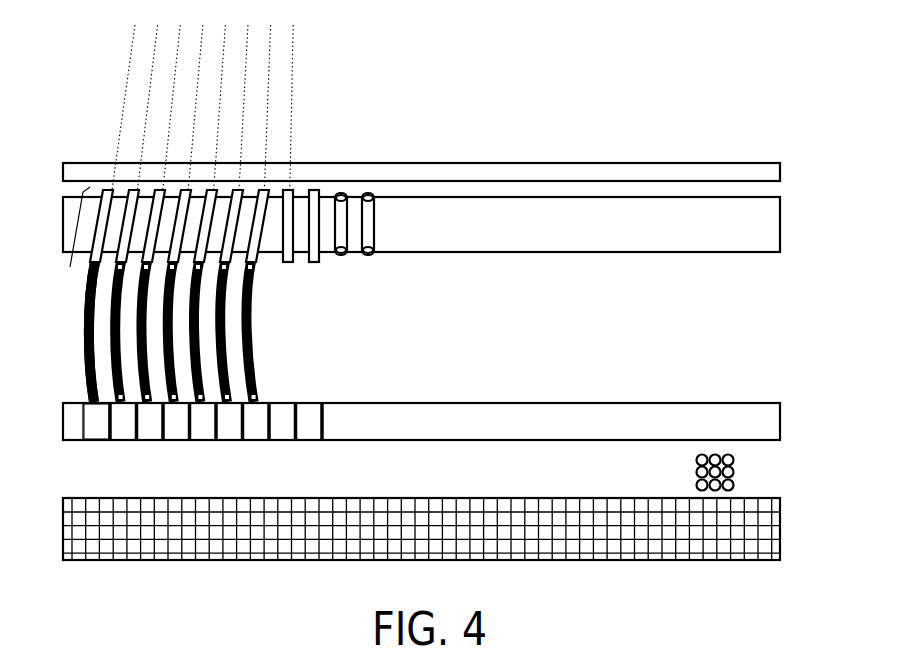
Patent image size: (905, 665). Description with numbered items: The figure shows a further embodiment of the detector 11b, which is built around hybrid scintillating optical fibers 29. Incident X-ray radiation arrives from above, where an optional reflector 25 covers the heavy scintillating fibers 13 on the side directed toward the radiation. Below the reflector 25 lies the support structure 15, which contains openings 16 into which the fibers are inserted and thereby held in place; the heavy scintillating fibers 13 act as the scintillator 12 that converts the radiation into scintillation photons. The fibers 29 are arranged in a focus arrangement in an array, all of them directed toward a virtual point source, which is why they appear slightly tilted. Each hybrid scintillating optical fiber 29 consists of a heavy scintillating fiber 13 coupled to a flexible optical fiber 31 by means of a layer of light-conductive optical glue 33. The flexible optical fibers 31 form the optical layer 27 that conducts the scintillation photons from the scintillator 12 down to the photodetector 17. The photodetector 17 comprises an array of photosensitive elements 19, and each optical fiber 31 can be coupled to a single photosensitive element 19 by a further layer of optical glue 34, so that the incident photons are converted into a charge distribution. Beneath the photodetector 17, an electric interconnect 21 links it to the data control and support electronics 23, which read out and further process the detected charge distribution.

The detector 11b is at (61, 84).
The scintillator 12 is at (794, 215).
The heavy scintillating fiber 13 is at (104, 191).
The support structure 15 is at (67, 220).
The openings 16 is at (367, 218).
The photodetector 17 is at (781, 425).
The photosensitive element 19 is at (88, 428).
The electric interconnect 21 is at (752, 468).
The data control and support electronics 23 is at (781, 535).
The reflector 25 is at (781, 172).
The optical layer 27 is at (742, 320).
The hybrid scintillating optical fiber 29 is at (78, 400).
The flexible optical fiber 31 is at (84, 340).
The layer of optical glue 33 is at (90, 266).
The layer of optical glue 34 is at (92, 403).